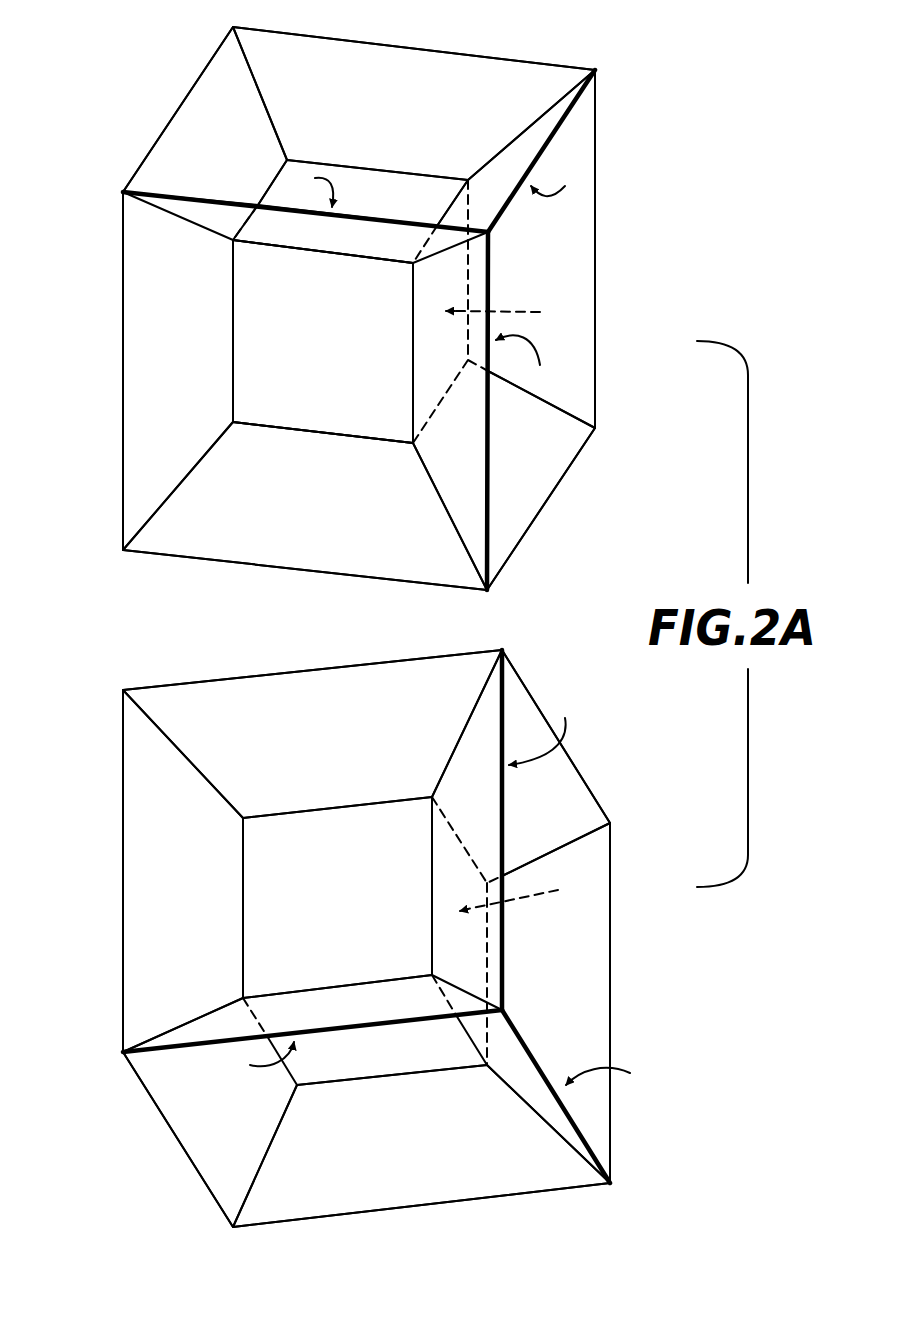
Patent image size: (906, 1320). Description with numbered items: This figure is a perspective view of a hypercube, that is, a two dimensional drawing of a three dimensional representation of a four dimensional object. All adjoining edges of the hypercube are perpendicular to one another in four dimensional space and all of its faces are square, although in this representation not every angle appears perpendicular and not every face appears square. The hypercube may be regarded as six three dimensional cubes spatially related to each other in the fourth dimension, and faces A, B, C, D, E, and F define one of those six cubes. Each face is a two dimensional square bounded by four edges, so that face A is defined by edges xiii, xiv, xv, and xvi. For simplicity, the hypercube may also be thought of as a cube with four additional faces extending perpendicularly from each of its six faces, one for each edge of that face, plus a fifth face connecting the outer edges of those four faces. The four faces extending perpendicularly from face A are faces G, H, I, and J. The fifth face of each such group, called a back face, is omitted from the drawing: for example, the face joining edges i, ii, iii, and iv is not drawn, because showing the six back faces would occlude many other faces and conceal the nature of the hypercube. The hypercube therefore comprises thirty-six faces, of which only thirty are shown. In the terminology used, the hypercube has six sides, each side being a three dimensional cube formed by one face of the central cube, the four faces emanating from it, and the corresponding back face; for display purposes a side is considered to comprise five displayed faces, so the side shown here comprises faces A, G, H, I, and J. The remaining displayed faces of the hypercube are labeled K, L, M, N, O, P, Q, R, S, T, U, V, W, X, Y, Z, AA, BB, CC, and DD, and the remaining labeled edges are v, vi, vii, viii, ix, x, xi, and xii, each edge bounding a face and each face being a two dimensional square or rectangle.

The edge i is at (205, 198).
The edge ii is at (123, 345).
The edge iii is at (172, 557).
The edge iv is at (489, 533).
The lower diagonal edge v is at (547, 507).
The rear vertical edge vi is at (597, 233).
The upper right diagonal edge vii is at (560, 118).
The top rear edge viii is at (406, 46).
The upper diagonal edge ix is at (172, 117).
The front bottom edge x is at (182, 1048).
The lower right diagonal edge xi is at (580, 1130).
The front right vertical edge xii is at (503, 707).
The edge xiii is at (233, 312).
The edge xiv is at (270, 430).
The edge xv is at (413, 418).
The edge xvi is at (257, 243).
The face A is at (333, 355).
The face B is at (366, 205).
The face C is at (505, 314).
The face D is at (391, 1067).
The face E is at (520, 894).
The face F is at (351, 915).
The face G is at (344, 249).
The face H is at (331, 507).
The face I is at (204, 358).
The face J is at (463, 427).
The top face K is at (403, 141).
The fold arrow L is at (312, 186).
The top left flap face M is at (232, 157).
The top right flap face N is at (502, 205).
The fold arrow O is at (558, 179).
The lower right face P is at (527, 463).
The fold arrow Q is at (527, 365).
The right side face R is at (553, 285).
The fold arrow S is at (259, 1063).
The bottom face T is at (401, 1150).
The bottom left flap face U is at (249, 1123).
The bottom right flap face V is at (523, 1075).
The upper right flap face W is at (553, 820).
The fold arrow X is at (610, 1081).
The fold arrow Y is at (541, 723).
The right side face Z is at (562, 980).
The top face AA is at (353, 755).
The lower inner strip face BB is at (368, 1018).
The left side face CC is at (213, 917).
The upper right inner face DD is at (493, 807).